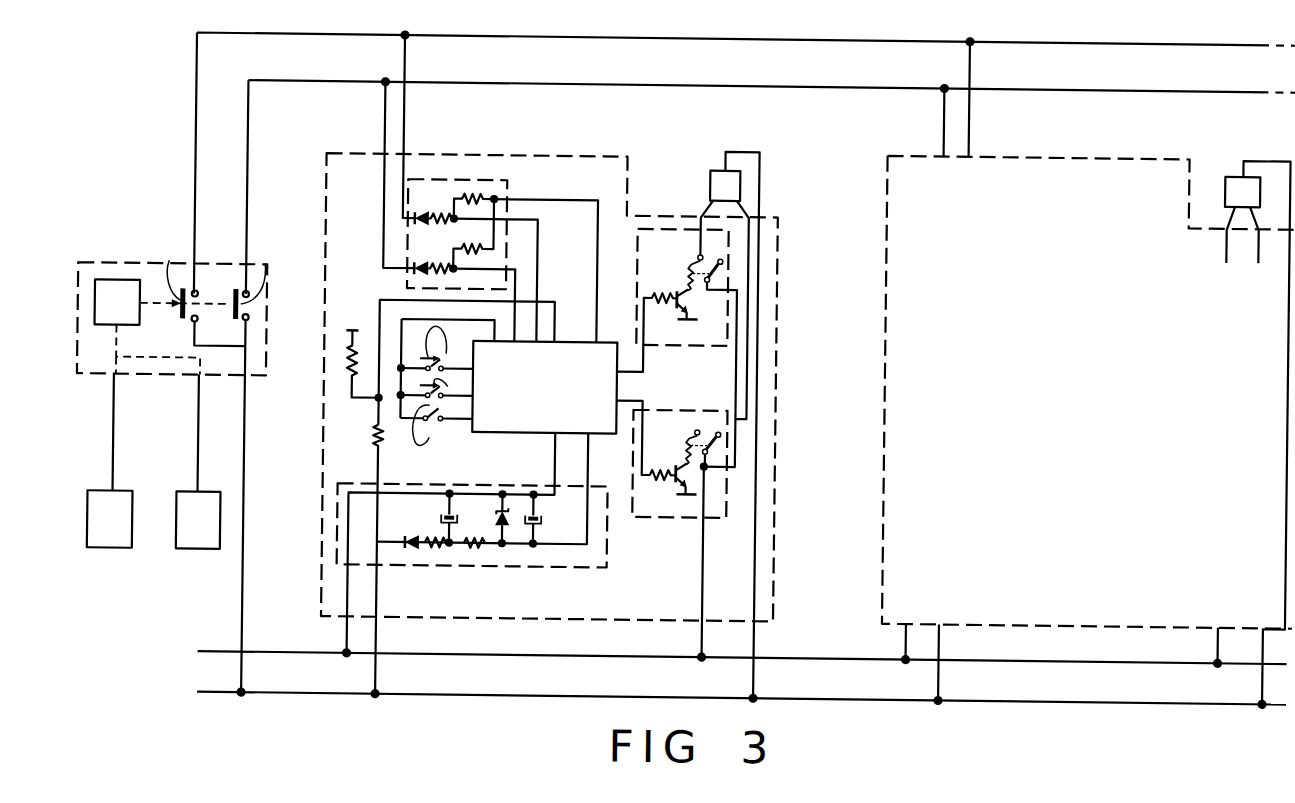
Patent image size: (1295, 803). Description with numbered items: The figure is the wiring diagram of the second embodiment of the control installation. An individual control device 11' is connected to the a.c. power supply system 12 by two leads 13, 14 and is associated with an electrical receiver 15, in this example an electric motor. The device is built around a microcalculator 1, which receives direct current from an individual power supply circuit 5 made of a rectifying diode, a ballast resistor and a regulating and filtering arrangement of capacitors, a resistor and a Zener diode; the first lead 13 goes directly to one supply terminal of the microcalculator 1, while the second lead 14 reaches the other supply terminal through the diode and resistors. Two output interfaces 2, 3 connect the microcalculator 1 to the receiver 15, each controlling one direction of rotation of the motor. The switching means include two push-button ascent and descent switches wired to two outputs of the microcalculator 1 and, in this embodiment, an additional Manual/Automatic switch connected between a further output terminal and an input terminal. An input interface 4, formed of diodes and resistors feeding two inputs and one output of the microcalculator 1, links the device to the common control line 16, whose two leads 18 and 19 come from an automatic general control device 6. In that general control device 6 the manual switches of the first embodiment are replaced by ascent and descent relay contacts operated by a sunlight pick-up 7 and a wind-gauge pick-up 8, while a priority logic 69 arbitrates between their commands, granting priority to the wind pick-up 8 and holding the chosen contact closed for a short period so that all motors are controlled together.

The microcalculator 1 is at (485, 434).
The output interface 2 is at (710, 345).
The output interface 3 is at (672, 517).
The input interface 4 is at (513, 184).
The individual power supply circuit 5 is at (610, 569).
The automatic general control device 6 is at (172, 447).
The pick-up for sunlight 7 is at (112, 554).
The wind-gauge pick-up 8 is at (200, 554).
The individual control device 11' is at (808, 364).
The a.c. power supply system 12 is at (194, 650).
The lead 13 is at (285, 643).
The lead 14 is at (287, 699).
The electrical receiver 15 is at (712, 168).
The common control line 16 is at (340, 106).
The lead 18 is at (350, 85).
The lead 19 is at (299, 38).
The priority logic 69 is at (127, 286).